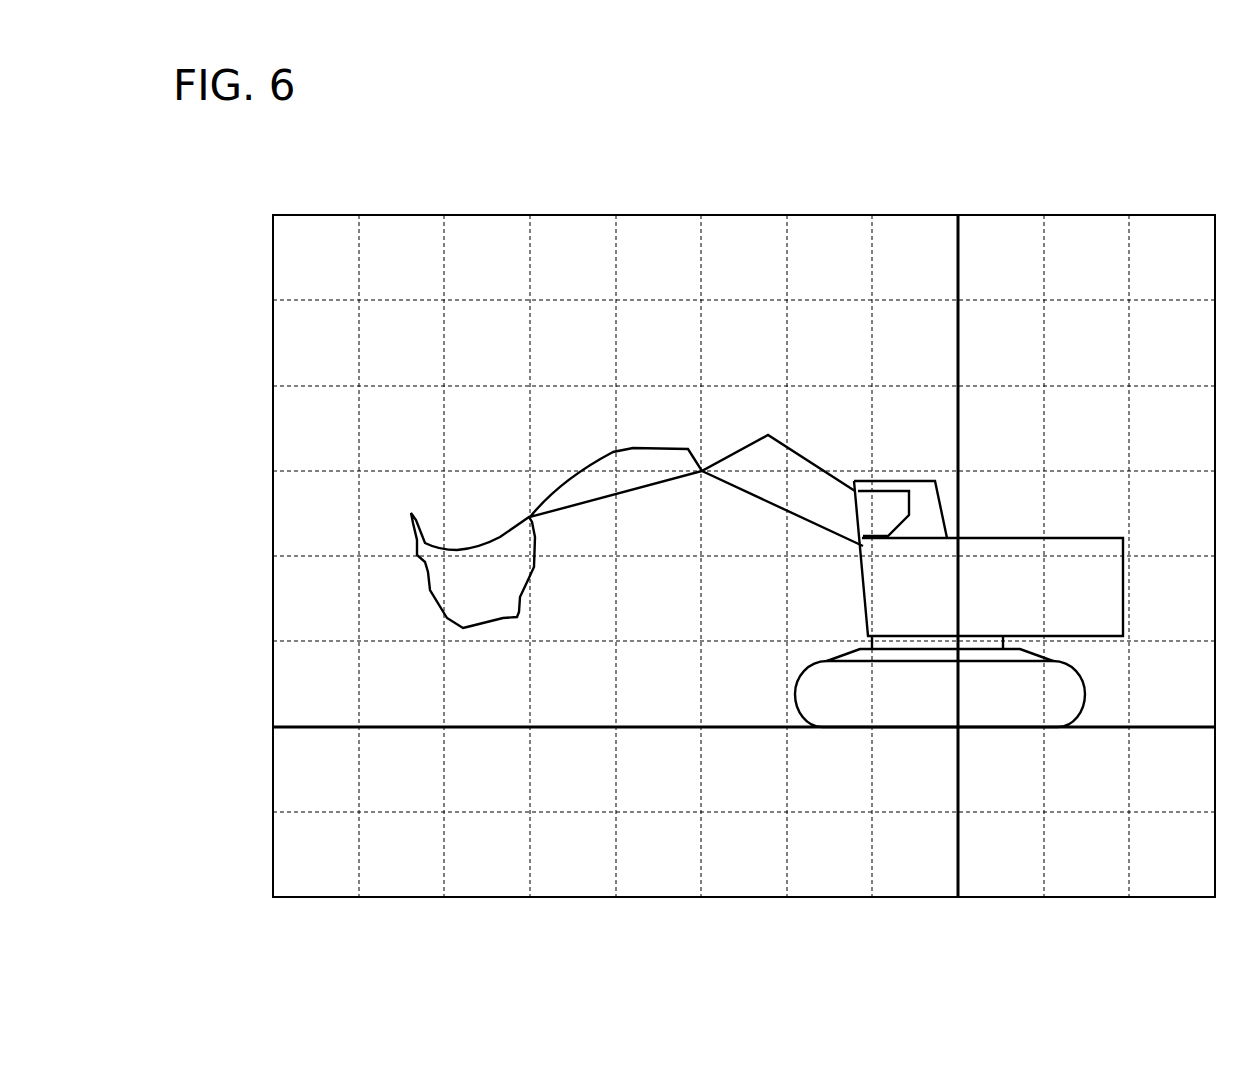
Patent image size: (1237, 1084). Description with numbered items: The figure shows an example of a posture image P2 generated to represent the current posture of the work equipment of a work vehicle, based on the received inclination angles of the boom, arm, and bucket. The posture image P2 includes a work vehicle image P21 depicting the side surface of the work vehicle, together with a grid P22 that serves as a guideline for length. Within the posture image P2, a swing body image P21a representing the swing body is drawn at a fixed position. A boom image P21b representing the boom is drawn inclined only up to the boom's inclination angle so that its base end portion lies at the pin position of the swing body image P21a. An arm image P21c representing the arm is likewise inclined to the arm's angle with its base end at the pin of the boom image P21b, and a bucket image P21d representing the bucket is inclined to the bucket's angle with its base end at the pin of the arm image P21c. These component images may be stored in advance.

The posture image P2 is at (1086, 176).
The grid P22 is at (1045, 267).
The work vehicle image P21 is at (1082, 497).
The swing body image P21a is at (1125, 568).
The boom image P21b is at (738, 450).
The arm image P21c is at (597, 455).
The bucket image P21d is at (413, 530).